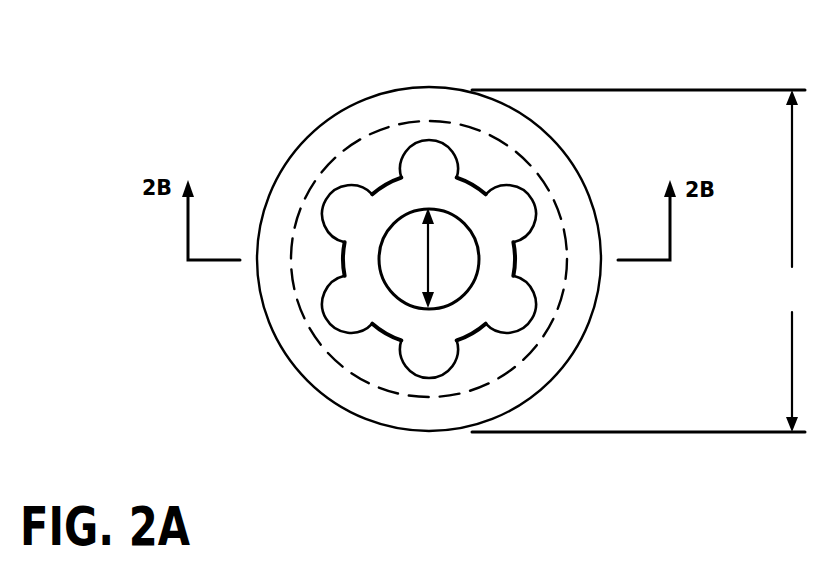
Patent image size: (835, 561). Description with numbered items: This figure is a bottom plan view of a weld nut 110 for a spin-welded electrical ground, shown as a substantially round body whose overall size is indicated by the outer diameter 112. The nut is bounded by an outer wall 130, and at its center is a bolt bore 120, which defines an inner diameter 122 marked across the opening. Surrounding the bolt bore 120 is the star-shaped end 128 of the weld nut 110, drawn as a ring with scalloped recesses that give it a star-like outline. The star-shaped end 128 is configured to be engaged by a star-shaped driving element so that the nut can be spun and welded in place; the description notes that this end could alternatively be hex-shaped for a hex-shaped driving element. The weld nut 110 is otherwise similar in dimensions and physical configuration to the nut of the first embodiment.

The weld nut 110 is at (212, 97).
The outer diameter 112 is at (638, 261).
The bolt bore 120 is at (402, 276).
The inner diameter 122 is at (427, 262).
The star-shaped end 128 is at (420, 347).
The outer wall 130 is at (355, 143).